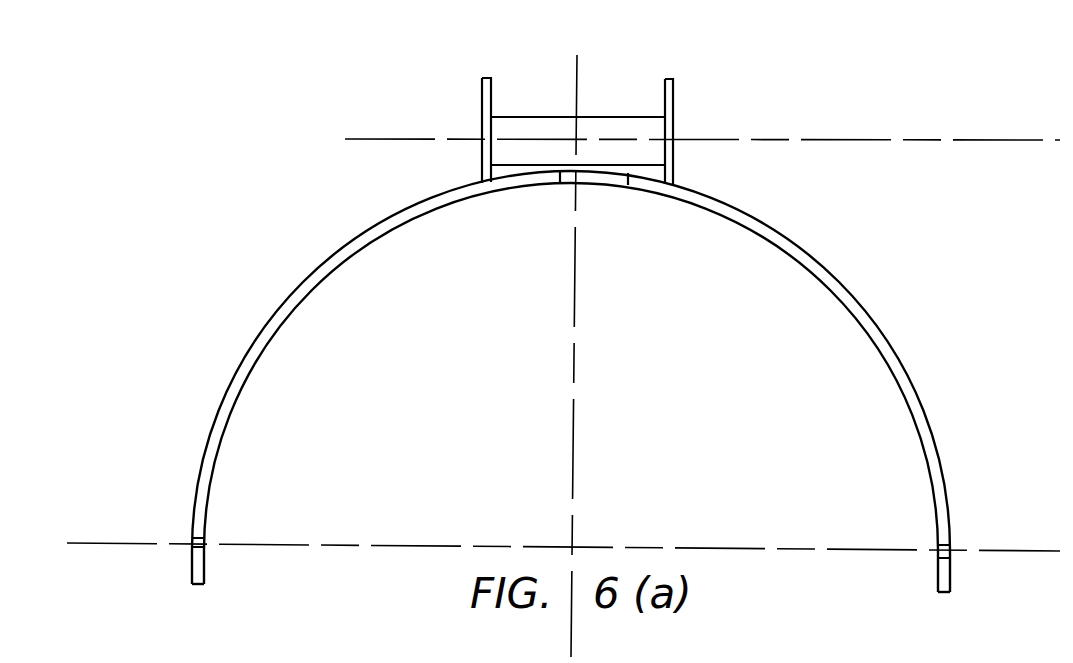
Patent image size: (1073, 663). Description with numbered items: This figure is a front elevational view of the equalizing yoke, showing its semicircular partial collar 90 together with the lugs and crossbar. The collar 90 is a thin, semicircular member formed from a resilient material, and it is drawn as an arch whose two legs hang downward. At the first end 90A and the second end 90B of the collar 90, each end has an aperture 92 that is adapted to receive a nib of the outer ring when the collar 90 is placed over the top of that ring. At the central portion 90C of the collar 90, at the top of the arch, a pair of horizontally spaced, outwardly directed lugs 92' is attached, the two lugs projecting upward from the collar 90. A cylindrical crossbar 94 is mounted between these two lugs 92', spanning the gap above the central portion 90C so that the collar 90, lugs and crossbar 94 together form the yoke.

The semicircular partial collar 90 is at (403, 212).
The first end of collar 90A is at (199, 569).
The second end of collar 90B is at (952, 573).
The central portion of collar 90C is at (455, 198).
The aperture 92 is at (575, 505).
The lug 92' is at (447, 125).
The cylindrical crossbar 94 is at (607, 132).